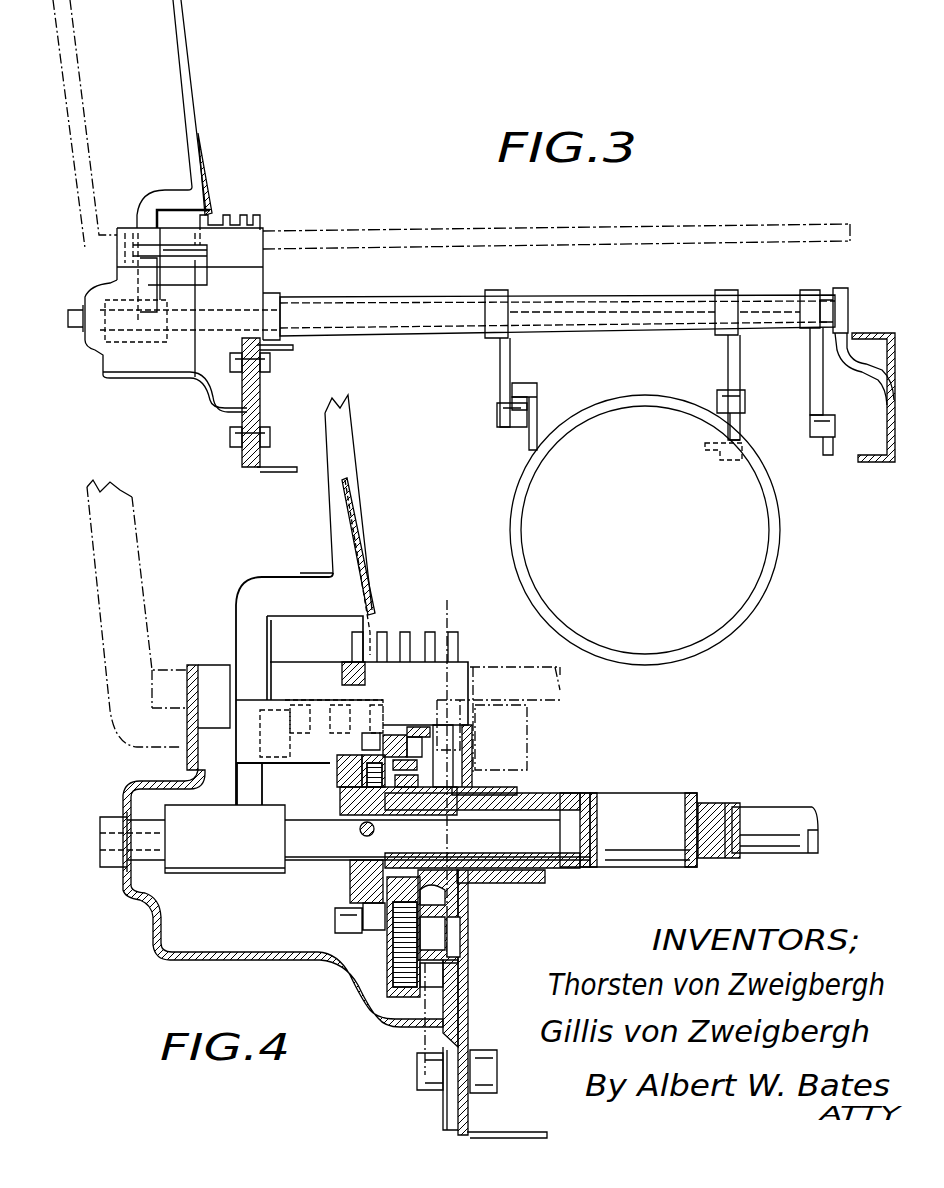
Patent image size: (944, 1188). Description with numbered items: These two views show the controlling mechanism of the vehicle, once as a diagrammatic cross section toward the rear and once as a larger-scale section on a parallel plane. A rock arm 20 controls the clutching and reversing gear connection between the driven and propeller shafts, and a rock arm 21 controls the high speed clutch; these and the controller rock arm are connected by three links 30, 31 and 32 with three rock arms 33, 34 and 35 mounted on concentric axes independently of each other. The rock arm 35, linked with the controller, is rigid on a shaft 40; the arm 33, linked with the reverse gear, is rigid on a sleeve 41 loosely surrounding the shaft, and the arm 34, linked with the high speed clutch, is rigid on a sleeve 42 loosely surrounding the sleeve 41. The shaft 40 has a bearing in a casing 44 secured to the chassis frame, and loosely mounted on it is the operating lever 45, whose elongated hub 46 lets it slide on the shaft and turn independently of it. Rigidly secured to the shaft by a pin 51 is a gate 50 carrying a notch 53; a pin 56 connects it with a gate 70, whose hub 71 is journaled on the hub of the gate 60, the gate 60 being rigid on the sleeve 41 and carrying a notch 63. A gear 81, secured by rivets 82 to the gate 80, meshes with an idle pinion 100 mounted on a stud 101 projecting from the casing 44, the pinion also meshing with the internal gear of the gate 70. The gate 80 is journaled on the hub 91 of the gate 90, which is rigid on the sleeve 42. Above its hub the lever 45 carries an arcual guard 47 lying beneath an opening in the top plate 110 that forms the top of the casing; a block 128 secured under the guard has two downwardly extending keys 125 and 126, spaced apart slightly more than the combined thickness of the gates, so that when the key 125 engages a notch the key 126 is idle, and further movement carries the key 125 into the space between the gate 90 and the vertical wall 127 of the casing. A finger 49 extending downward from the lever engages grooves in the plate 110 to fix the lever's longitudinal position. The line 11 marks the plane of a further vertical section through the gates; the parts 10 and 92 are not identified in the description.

In FIG. 3, the cylinder 10 is at (770, 522).
In FIG. 3, the section line 11 is at (272, 360).
In FIG. 4, the section line 11 is at (426, 1050).
In FIG. 3, the rock arm 20 is at (742, 425).
In FIG. 3, the rock arm 21 is at (538, 418).
In FIG. 3, the link 30 is at (722, 390).
In FIG. 3, the link 31 is at (515, 383).
In FIG. 3, the link 32 is at (826, 455).
In FIG. 3, the rock arm 33 is at (732, 380).
In FIG. 3, the rock arm 34 is at (500, 370).
In FIG. 3, the rock arm 35 is at (822, 392).
In FIG. 3, the shaft 40 is at (755, 298).
In FIG. 4, the shaft 40 is at (790, 808).
In FIG. 3, the sleeve 41 is at (633, 296).
In FIG. 4, the sleeve 41 is at (712, 808).
In FIG. 3, the sleeve 42 is at (445, 297).
In FIG. 4, the sleeve 42 is at (525, 795).
In FIG. 3, the casing 44 is at (157, 346).
In FIG. 4, the casing 44 is at (302, 960).
In FIG. 3, the operating lever 45 is at (197, 110).
In FIG. 4, the operating lever 45 is at (352, 462).
In FIG. 4, the elongated hub 46 is at (192, 839).
In FIG. 4, the arcual guard 47 is at (283, 715).
In FIG. 3, the finger 49 is at (213, 203).
In FIG. 4, the finger 49 is at (378, 602).
In FIG. 4, the gate 50 is at (348, 800).
In FIG. 4, the pin 51 is at (360, 829).
In FIG. 4, the notch 53 is at (345, 752).
In FIG. 4, the pin 56 is at (368, 932).
In FIG. 4, the gate 60 is at (362, 805).
In FIG. 4, the notch 63 is at (340, 777).
In FIG. 4, the gate 70 is at (395, 755).
In FIG. 4, the hub 71 is at (392, 985).
In FIG. 4, the gate 80 is at (455, 898).
In FIG. 4, the gear 81 is at (350, 893).
In FIG. 4, the rivets 82 is at (401, 799).
In FIG. 4, the gate 90 is at (444, 756).
In FIG. 4, the hub 91 is at (425, 818).
In FIG. 4, the ring 92 is at (417, 747).
In FIG. 4, the idle pinion 100 is at (395, 965).
In FIG. 4, the stud 101 is at (434, 933).
In FIG. 3, the top plate 110 is at (190, 302).
In FIG. 4, the key 125 is at (480, 685).
In FIG. 4, the key 126 is at (283, 784).
In FIG. 4, the vertical wall 127 is at (473, 760).
In FIG. 4, the block 128 is at (340, 735).